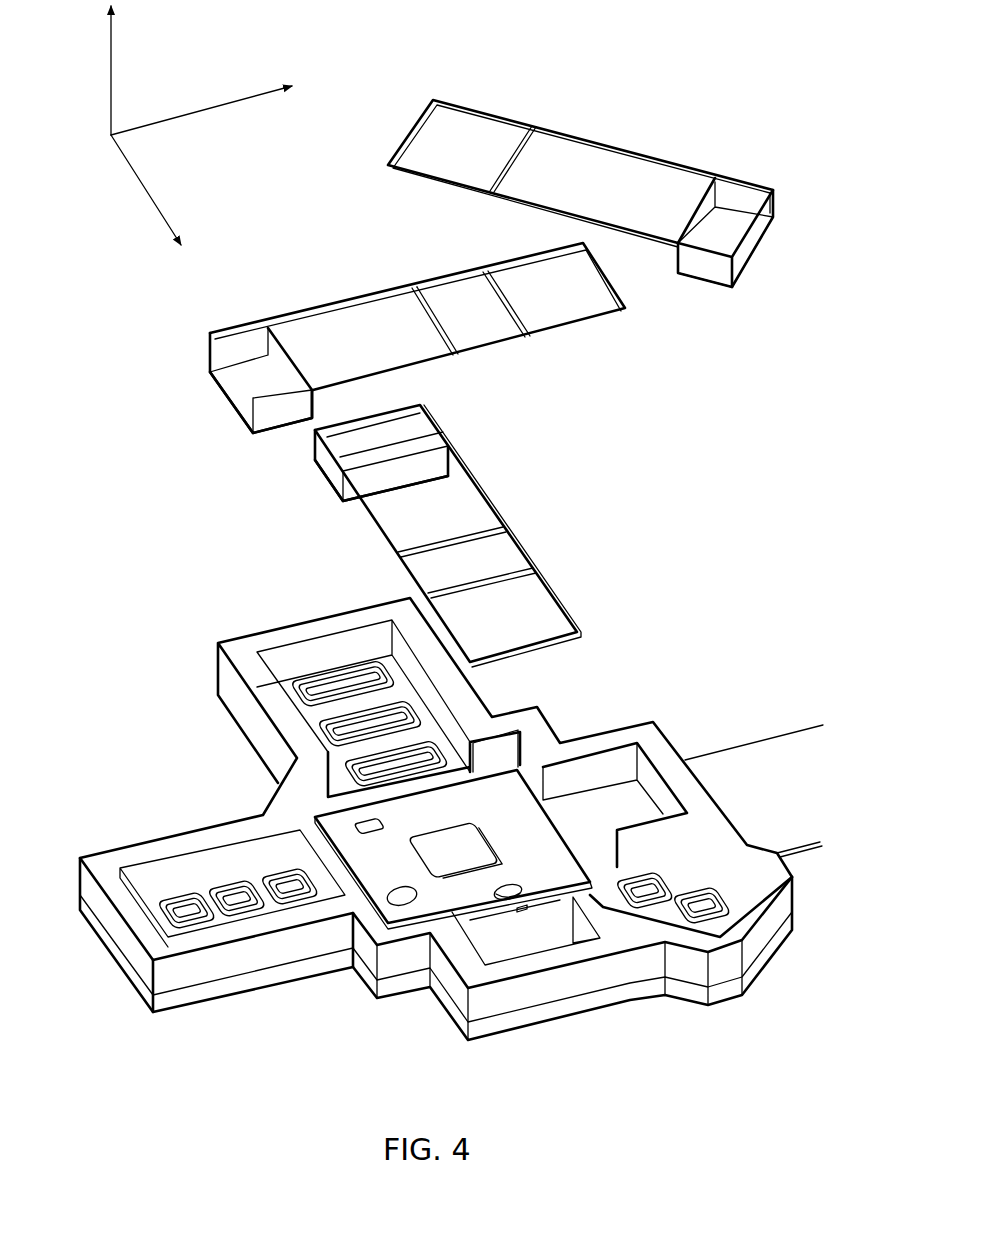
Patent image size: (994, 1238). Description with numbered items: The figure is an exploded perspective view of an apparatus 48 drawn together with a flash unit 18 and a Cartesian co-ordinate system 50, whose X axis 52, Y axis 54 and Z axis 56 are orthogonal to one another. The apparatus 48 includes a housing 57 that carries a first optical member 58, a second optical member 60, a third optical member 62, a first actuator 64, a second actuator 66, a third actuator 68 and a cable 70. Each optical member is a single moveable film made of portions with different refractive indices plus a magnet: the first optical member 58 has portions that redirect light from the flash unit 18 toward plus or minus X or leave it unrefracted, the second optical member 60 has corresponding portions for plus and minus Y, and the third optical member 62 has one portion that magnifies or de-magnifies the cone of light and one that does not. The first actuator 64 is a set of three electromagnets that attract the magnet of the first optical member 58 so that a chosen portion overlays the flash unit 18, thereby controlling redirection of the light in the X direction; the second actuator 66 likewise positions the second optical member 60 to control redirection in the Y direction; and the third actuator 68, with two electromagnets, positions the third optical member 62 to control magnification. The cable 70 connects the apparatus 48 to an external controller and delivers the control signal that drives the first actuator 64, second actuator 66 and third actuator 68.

The flash unit 18 is at (453, 849).
The apparatus 48 is at (746, 451).
The Cartesian co-ordinate system 50 is at (167, 142).
The X axis 52 is at (152, 197).
The Y axis 54 is at (226, 103).
The Z axis 56 is at (110, 78).
The housing 57 is at (439, 837).
The first optical member 58 is at (441, 536).
The second optical member 60 is at (376, 338).
The third optical member 62 is at (607, 158).
The first actuator 64 is at (341, 703).
The second actuator 66 is at (195, 950).
The third actuator 68 is at (725, 918).
The cable 70 is at (815, 748).